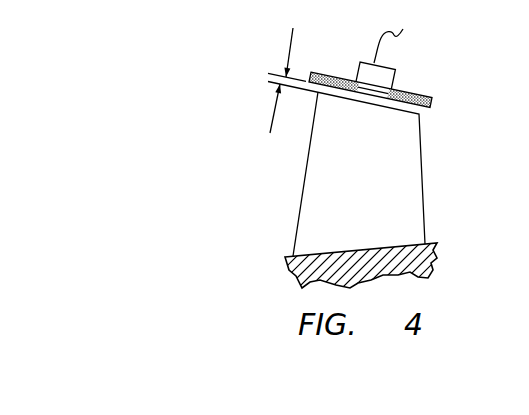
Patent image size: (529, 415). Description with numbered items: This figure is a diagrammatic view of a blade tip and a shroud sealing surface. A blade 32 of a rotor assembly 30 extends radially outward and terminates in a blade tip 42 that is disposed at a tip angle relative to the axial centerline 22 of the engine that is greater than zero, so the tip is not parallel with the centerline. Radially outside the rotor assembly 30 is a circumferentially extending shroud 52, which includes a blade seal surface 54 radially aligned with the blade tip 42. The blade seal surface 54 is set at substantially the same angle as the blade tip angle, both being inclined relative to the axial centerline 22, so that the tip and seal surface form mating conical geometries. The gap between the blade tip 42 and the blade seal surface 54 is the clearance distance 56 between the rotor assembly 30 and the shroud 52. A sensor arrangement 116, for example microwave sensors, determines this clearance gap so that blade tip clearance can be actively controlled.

The axial centerline 22 is at (76, 0).
The rotor assembly 30 is at (281, 264).
The blade 32 is at (375, 202).
The blade tip 42 is at (338, 79).
The shroud 52 is at (413, 101).
The blade seal surface 54 is at (399, 110).
The clearance distance 56 is at (272, 121).
The sensor arrangement 116 is at (393, 82).